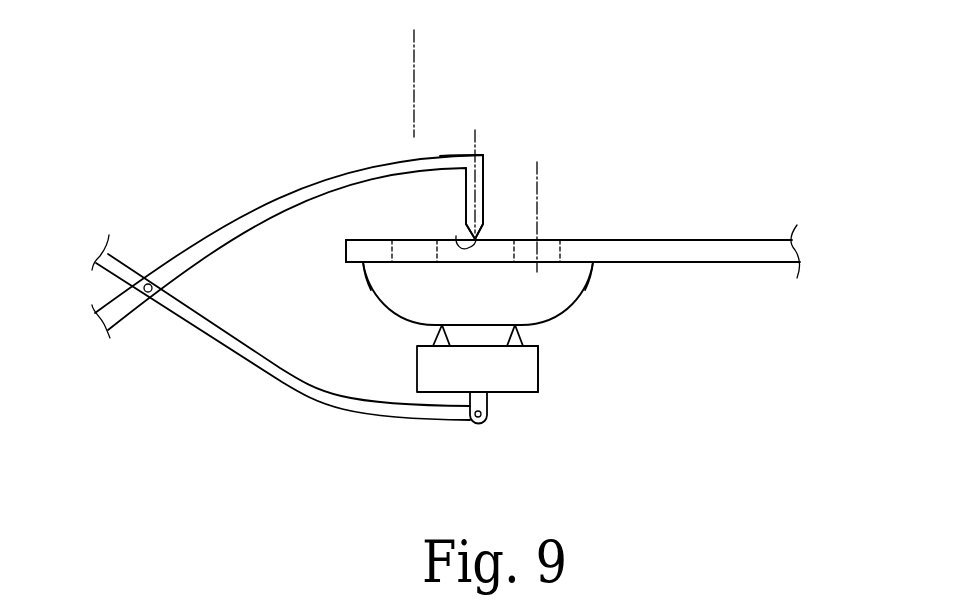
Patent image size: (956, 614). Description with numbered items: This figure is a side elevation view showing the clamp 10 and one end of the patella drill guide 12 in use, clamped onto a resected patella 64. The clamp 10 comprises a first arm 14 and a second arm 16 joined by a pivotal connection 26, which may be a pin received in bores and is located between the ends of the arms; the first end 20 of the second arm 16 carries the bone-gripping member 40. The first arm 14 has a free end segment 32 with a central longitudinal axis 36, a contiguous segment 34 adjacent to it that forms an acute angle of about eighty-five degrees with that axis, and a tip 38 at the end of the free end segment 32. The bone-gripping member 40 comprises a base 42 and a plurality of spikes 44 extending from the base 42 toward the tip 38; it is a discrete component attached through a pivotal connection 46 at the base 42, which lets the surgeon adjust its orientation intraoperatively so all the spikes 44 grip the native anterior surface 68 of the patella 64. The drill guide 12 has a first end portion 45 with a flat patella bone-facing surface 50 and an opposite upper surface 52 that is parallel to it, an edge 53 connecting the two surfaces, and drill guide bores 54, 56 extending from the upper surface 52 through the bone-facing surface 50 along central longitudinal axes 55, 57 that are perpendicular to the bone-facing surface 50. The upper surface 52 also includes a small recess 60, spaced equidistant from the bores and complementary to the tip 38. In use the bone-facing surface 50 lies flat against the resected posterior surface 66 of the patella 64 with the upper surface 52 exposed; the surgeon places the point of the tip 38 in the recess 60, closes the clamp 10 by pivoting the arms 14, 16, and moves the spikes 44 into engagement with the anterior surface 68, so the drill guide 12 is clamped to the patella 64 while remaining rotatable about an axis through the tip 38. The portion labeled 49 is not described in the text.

The clamp 10 is at (230, 350).
The patella drill guide 12 is at (725, 240).
The first arm 14 is at (276, 197).
The second arm 16 is at (311, 396).
The first end 20 is at (463, 423).
The pivotal connection 26 is at (148, 284).
The free end segment 32 is at (490, 192).
The contiguous segment 34 is at (455, 153).
The central longitudinal axis 36 is at (475, 140).
The tip 38 is at (456, 236).
The bone-gripping member 40 is at (428, 368).
The base 42 is at (526, 379).
The spikes 44 is at (514, 326).
The first end portion 45 is at (346, 253).
The pivotal connection 46 is at (483, 415).
The strip end 49 is at (727, 262).
The patella bone-facing surface 50 is at (362, 264).
The upper surface 52 is at (370, 239).
The edge 53 is at (487, 254).
The drill guide bore 54 is at (417, 250).
The central longitudinal axis 55 is at (414, 50).
The drill guide bore 56 is at (550, 247).
The central longitudinal axis 57 is at (540, 175).
The recess 60 is at (478, 240).
The patella 64 is at (565, 297).
The resected posterior surface 66 is at (600, 265).
The native anterior surface 68 is at (530, 328).